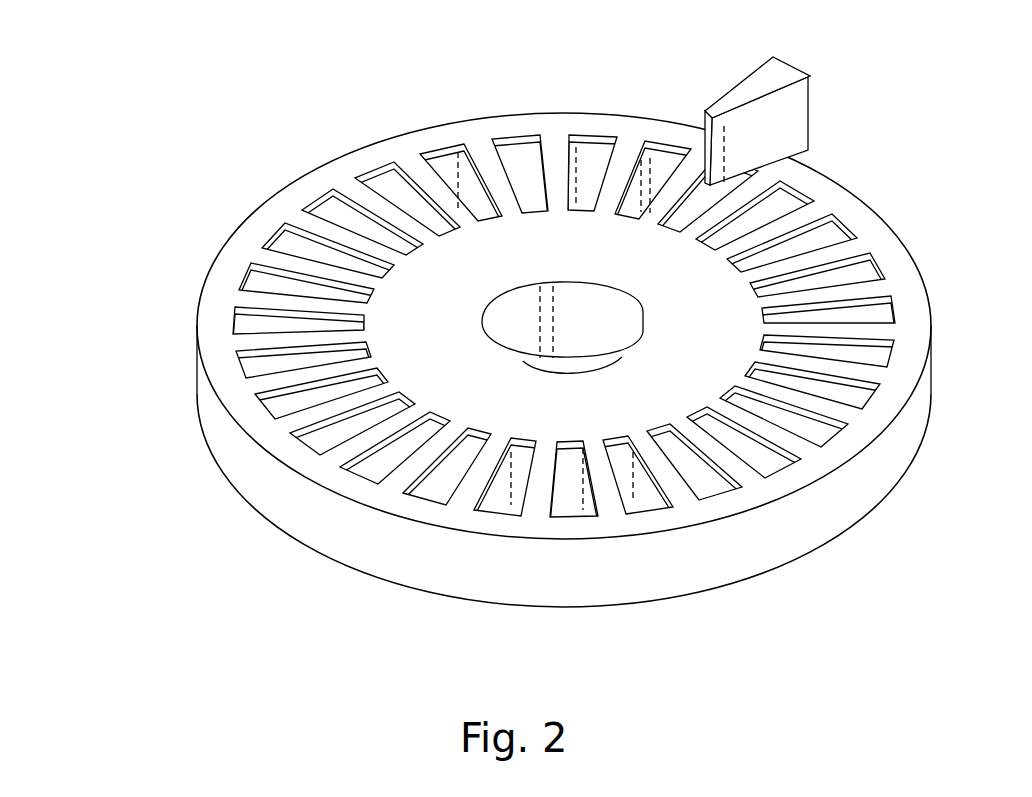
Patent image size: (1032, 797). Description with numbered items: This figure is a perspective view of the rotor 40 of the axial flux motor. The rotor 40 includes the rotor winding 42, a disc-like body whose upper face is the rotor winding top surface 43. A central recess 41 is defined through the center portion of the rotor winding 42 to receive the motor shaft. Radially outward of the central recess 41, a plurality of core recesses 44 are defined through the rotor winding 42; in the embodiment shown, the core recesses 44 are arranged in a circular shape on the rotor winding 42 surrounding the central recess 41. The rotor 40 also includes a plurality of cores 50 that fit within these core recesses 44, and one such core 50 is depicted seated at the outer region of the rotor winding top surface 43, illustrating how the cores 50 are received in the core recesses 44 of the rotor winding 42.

The rotor 40 is at (592, 317).
The central recess 41 is at (581, 300).
The rotor winding 42 is at (852, 493).
The rotor winding top surface 43 is at (893, 391).
The core recesses 44 is at (872, 319).
The cores 50 is at (755, 83).